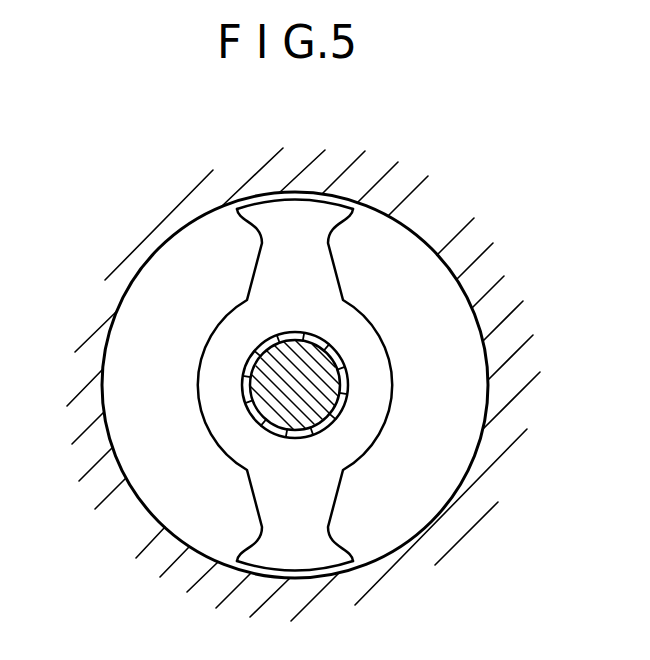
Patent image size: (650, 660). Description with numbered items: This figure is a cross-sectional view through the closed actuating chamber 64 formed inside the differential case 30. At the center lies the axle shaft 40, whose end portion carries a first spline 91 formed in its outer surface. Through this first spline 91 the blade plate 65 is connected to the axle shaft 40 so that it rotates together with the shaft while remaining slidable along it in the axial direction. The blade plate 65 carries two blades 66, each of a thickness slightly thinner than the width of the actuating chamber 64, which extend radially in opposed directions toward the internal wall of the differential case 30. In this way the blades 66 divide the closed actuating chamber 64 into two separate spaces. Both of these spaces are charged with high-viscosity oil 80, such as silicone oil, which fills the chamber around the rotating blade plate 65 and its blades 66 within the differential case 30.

The differential case 30 is at (427, 210).
The axle shaft 40 is at (327, 393).
The actuating chamber 64 is at (460, 313).
The blade plate 65 is at (224, 428).
The blades 66 is at (278, 510).
The high-viscosity oil 80 is at (398, 508).
The first spline 91 is at (335, 420).